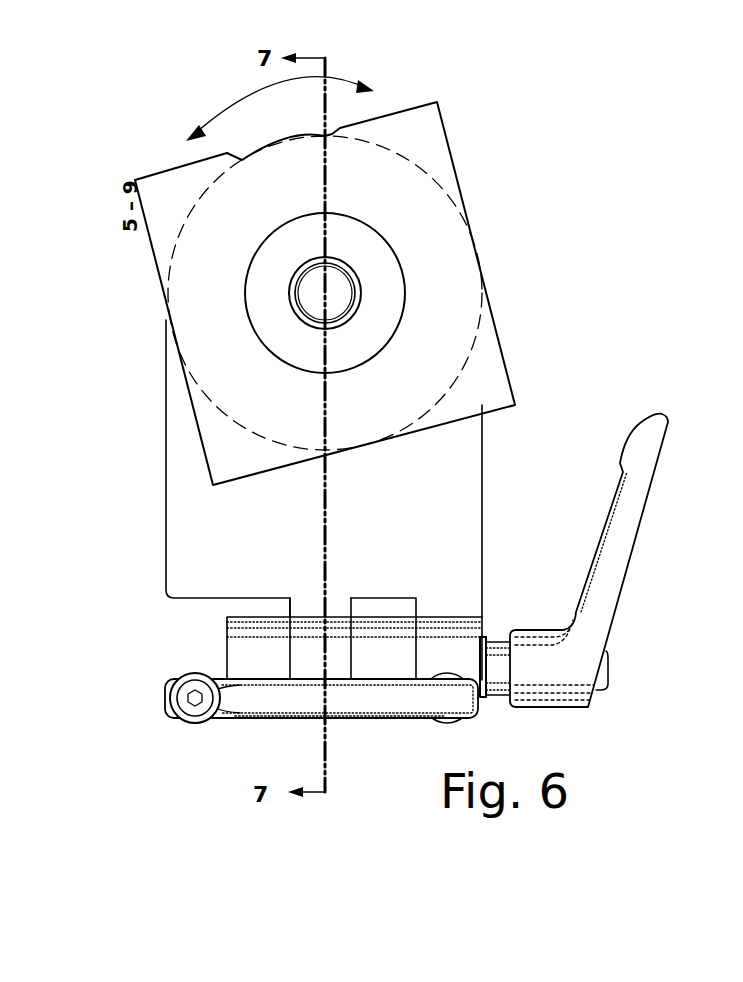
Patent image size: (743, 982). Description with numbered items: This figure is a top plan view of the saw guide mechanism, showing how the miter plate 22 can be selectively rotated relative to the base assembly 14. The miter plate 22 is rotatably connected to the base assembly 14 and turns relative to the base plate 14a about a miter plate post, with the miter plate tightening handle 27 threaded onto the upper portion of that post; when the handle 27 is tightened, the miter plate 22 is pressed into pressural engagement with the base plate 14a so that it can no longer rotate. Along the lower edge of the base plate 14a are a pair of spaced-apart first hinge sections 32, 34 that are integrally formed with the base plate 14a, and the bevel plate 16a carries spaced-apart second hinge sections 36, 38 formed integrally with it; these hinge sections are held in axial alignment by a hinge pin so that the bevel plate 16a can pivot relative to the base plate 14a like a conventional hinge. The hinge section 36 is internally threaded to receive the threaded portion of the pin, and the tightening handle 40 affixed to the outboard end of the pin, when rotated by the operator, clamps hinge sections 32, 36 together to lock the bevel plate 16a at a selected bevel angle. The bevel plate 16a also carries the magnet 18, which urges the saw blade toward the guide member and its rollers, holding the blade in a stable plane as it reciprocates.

The base assembly 14 is at (481, 498).
The base plate 14a is at (354, 573).
The bevel plate 16a is at (410, 718).
The magnet 18 is at (292, 722).
The miter plate 22 is at (433, 137).
The miter plate tightening handle 27 is at (387, 242).
The first hinge section 32 is at (458, 630).
The first hinge section 34 is at (330, 630).
The second hinge section 36 is at (383, 630).
The second hinge section 38 is at (255, 630).
The tightening handle 40 is at (622, 492).